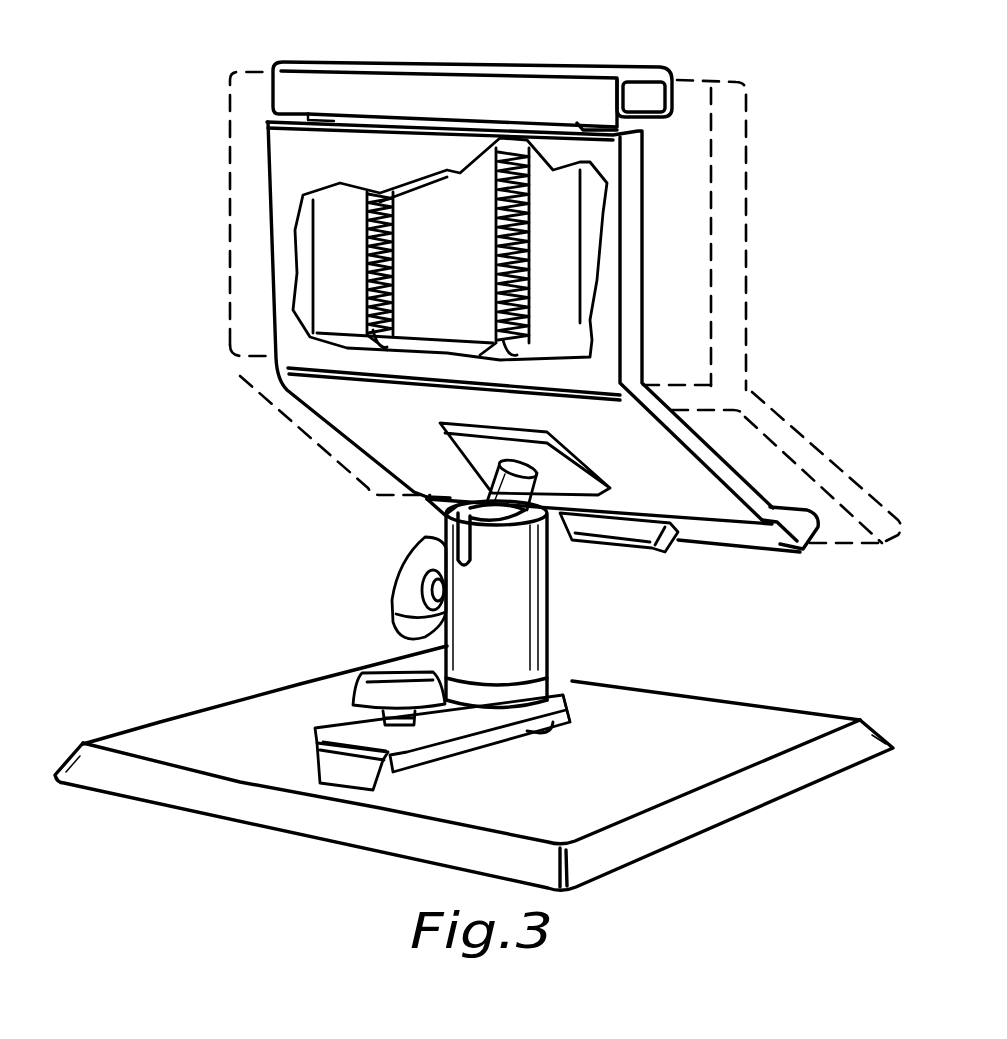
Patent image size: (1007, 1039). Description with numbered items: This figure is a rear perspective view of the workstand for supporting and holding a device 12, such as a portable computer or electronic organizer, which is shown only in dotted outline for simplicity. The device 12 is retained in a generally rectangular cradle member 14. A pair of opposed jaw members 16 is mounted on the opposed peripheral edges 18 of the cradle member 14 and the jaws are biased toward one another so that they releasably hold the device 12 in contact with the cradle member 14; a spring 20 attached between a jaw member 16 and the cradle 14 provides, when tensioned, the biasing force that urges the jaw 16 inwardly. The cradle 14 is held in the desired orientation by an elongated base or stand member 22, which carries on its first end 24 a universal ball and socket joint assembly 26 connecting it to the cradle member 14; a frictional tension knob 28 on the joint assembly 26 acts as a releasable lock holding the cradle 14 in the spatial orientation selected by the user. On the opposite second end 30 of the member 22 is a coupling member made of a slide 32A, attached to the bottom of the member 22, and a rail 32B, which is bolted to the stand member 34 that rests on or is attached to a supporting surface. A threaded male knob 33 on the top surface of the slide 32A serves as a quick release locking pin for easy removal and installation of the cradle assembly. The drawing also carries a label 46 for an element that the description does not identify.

The device 12 is at (752, 168).
The cradle member 14 is at (265, 167).
The jaw members 16 is at (588, 64).
The peripheral edges 18 is at (333, 120).
The spring 20 is at (360, 273).
The elongated base or stand member 22 is at (552, 606).
The first end 24 is at (483, 492).
The universal ball and socket joint assembly 26 is at (437, 430).
The frictional tension knob 28 is at (393, 586).
The second end 30 is at (550, 682).
The slide 32A is at (578, 702).
The rail 32B is at (340, 787).
The threaded male knob 33 is at (356, 691).
The stand member 34 is at (740, 822).
The plate 46 is at (675, 548).